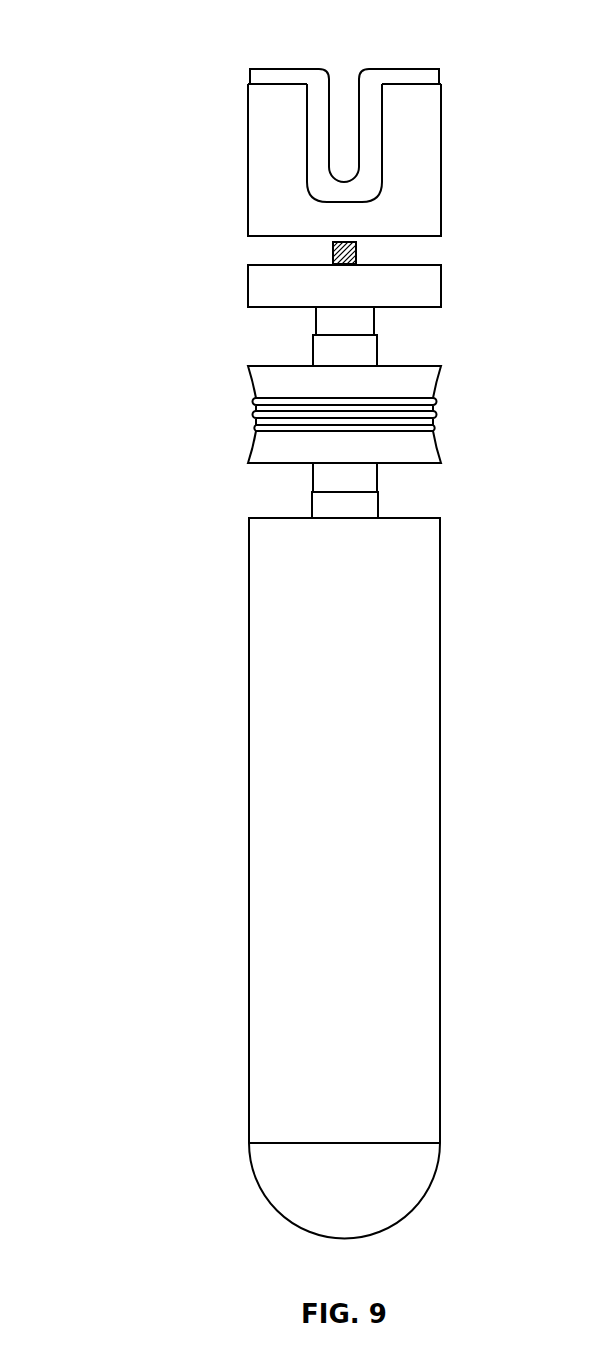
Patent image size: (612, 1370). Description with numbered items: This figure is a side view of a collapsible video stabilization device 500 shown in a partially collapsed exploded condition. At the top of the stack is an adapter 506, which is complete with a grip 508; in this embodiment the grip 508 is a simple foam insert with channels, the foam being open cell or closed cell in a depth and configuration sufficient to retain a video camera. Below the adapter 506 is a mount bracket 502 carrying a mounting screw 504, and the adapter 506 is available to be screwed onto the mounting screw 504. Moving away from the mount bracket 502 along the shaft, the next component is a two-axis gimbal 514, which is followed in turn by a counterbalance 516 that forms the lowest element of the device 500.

The video stabilization device 500 is at (124, 77).
The mount bracket 502 is at (423, 285).
The mounting screw 504 is at (330, 253).
The adapter 506 is at (423, 156).
The grip 508 is at (402, 67).
The 2-axis gimbal 514 is at (420, 377).
The counterbalance 516 is at (423, 855).